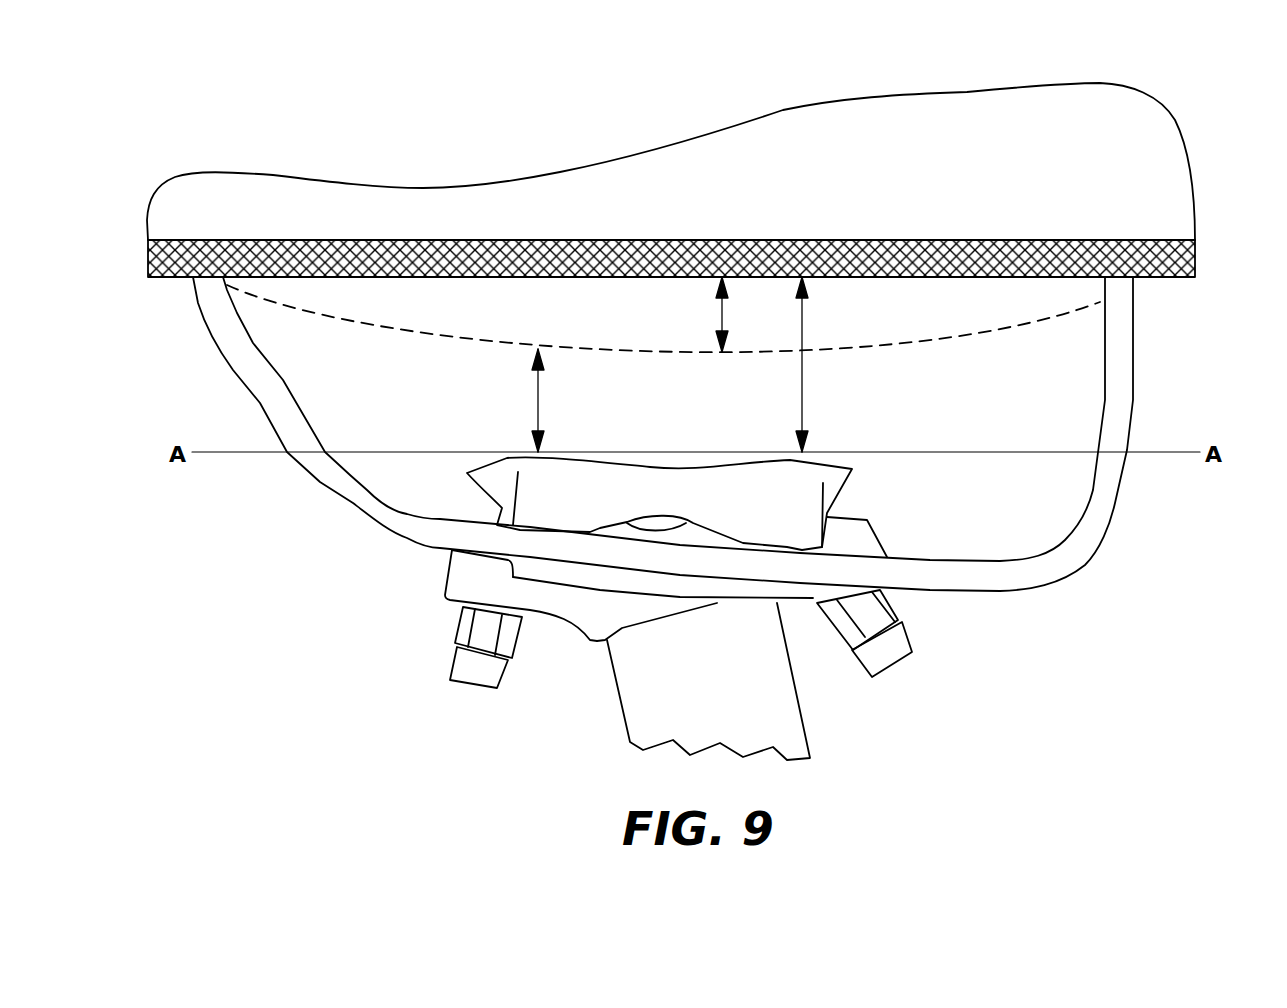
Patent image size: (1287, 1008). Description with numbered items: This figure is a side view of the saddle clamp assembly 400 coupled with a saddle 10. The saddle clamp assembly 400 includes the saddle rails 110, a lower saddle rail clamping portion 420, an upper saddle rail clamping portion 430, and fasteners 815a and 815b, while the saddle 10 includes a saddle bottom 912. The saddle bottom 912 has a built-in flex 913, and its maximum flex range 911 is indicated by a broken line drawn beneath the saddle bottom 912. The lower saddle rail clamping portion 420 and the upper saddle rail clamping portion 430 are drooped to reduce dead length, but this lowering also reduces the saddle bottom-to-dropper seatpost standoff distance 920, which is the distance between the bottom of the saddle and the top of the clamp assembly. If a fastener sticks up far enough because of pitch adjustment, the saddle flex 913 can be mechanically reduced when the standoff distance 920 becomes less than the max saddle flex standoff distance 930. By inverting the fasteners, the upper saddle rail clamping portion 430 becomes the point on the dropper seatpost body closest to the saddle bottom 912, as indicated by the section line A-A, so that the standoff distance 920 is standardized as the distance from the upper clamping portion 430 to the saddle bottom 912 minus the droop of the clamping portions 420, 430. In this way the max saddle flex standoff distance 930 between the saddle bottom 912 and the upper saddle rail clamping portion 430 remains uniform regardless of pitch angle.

The saddle 10 is at (781, 112).
The saddle bottom 912 is at (1163, 278).
The max flex range 911 is at (970, 345).
The saddle flex 913 is at (721, 318).
The saddle bottom-to-dropper seatpost standoff distance 920 is at (802, 393).
The max saddle flex standoff distance 930 is at (538, 395).
The saddle rails 110 is at (350, 517).
The upper saddle rail clamping portion 430 is at (853, 475).
The saddle clamp assembly 400 is at (443, 584).
The lower saddle rail clamping portion 420 is at (590, 578).
The fastener 815a is at (468, 688).
The fastener 815b is at (887, 670).